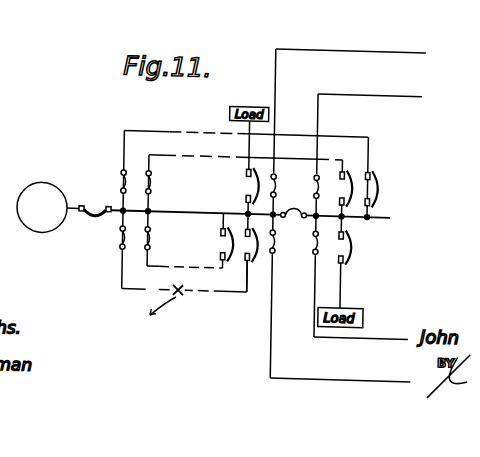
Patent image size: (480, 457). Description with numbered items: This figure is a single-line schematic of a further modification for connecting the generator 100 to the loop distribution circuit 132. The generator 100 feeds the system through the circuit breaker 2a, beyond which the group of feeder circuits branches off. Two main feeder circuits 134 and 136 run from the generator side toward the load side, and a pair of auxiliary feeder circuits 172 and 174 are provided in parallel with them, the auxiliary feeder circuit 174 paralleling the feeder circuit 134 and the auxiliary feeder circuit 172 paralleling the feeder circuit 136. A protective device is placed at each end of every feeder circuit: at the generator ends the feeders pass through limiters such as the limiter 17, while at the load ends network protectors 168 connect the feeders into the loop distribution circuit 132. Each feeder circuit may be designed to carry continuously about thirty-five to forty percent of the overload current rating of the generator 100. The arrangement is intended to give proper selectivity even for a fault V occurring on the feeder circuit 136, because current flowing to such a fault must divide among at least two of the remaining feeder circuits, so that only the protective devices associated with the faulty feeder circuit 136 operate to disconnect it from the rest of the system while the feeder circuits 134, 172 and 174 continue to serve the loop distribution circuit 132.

The generator 100 is at (45, 186).
The circuit breaker 2a is at (98, 210).
The feeder circuit 134 is at (158, 132).
The limiter 17 is at (150, 185).
The auxiliary feeder circuit 174 is at (231, 158).
The auxiliary feeder circuit 172 is at (183, 268).
The feeder circuit 136 is at (239, 296).
The network protector 168 is at (376, 186).
The loop distribution circuit 132 is at (455, 123).